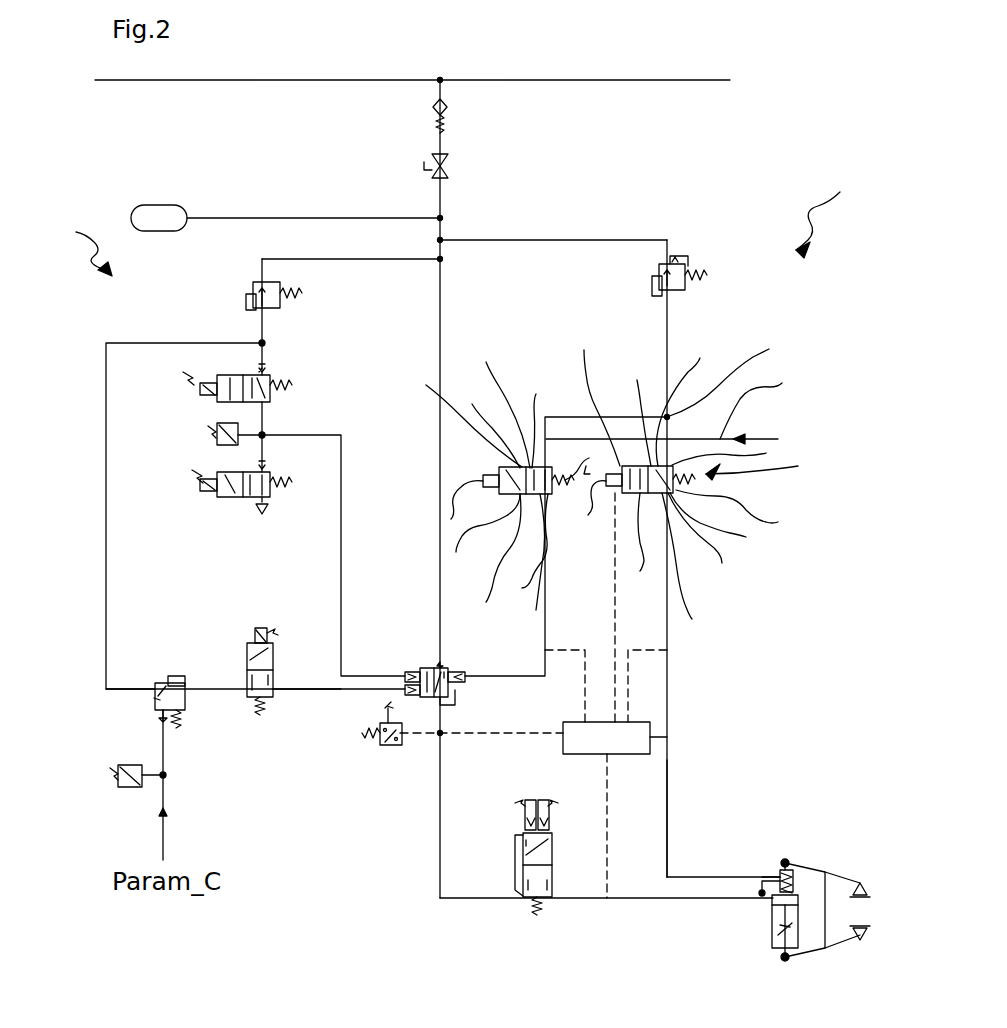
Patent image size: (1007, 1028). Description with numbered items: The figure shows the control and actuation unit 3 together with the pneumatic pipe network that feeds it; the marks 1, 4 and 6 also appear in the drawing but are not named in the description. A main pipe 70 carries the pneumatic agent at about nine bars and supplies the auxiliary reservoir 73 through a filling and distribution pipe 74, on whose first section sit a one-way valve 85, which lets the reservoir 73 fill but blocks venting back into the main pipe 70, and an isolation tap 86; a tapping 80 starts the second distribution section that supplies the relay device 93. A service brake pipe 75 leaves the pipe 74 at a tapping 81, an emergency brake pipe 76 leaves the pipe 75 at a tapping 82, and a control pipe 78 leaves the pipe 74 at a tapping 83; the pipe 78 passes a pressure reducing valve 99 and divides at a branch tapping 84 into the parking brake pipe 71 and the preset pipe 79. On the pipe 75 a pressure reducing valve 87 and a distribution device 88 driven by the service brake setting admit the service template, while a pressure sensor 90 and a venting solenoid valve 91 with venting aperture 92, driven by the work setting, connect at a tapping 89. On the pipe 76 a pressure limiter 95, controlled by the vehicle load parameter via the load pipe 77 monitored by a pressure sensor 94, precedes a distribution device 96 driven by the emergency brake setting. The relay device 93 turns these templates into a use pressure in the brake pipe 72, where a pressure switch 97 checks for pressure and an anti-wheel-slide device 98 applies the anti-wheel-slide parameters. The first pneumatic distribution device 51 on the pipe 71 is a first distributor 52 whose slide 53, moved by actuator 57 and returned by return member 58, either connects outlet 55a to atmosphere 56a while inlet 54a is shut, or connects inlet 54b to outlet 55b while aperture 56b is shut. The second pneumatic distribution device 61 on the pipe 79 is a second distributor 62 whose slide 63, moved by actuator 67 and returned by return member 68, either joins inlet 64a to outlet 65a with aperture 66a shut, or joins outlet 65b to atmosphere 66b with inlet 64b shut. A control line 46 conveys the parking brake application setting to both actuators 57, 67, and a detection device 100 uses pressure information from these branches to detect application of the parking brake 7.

The braking system 1 is at (826, 216).
The control and actuation unit 3 is at (82, 249).
The brake pedal linkage 4 is at (843, 948).
The brake cylinder 6 is at (772, 940).
The parking brake 7 is at (790, 877).
The control line 46 is at (774, 411).
The first pneumatic distribution device 51 is at (676, 482).
The first distributor 52 is at (724, 524).
The movable slide 53 is at (686, 564).
The single inlet aperture 54a is at (735, 464).
The single inlet aperture 54b is at (636, 412).
The single outlet aperture 55a is at (707, 539).
The single outlet aperture 55b is at (647, 542).
The aperture opening into the atmosphere 56a is at (692, 399).
The aperture opening into the atmosphere 56b is at (595, 396).
The actuator 57 is at (592, 512).
The return member 58 is at (737, 510).
The second pneumatic distribution device 61 is at (458, 468).
The second distributor 62 is at (483, 541).
The movable slide 63 is at (529, 565).
The single inlet aperture 64a is at (544, 418).
The single inlet aperture 64b is at (486, 422).
The single outlet aperture 65a is at (568, 541).
The single outlet aperture 65b is at (494, 554).
The aperture opening into the atmosphere 66a is at (501, 400).
The aperture opening into the atmosphere 66b is at (455, 416).
The actuator 67 is at (466, 508).
The return member 68 is at (590, 462).
The main pipe 70 is at (486, 80).
The parking brake pipe 71 is at (667, 812).
The brake pipe 72 is at (655, 898).
The auxiliary reservoir 73 is at (160, 205).
The filling and distribution pipe 74 is at (415, 153).
The service brake pipe 75 is at (366, 259).
The emergency brake pipe 76 is at (106, 372).
The load pipe 77 is at (268, 448).
The control pipe 78 is at (580, 240).
The preset pipe 79 is at (572, 438).
The tapping 80 is at (440, 218).
The tapping 81 is at (440, 259).
The tapping 82 is at (262, 343).
The tapping 83 is at (440, 240).
The branch tapping 84 is at (674, 391).
The one-way valve 85 is at (447, 108).
The isolation tap 86 is at (447, 160).
The pressure reducing valve 87 is at (253, 290).
The distribution device 88 is at (275, 378).
The tapping 89 is at (262, 435).
The pressure sensor 90 is at (208, 440).
The venting solenoid valve 91 is at (218, 499).
The venting aperture 92 is at (262, 515).
The relay device 93 is at (418, 668).
The pressure sensor 94 is at (130, 788).
The pressure limiter 95 is at (152, 686).
The distribution device 96 is at (273, 697).
The pressure switch 97 is at (380, 740).
The anti-wheel-slide device 98 is at (530, 897).
The pressure reducing valve 99 is at (685, 290).
The detection device 100 is at (667, 737).